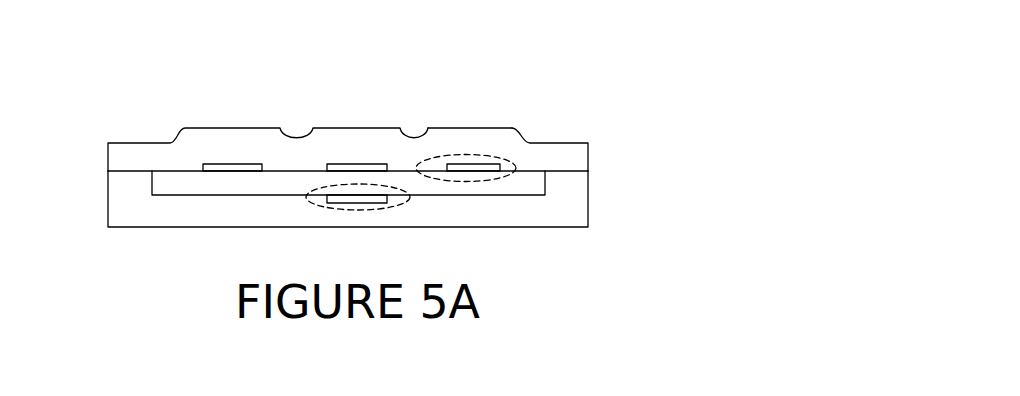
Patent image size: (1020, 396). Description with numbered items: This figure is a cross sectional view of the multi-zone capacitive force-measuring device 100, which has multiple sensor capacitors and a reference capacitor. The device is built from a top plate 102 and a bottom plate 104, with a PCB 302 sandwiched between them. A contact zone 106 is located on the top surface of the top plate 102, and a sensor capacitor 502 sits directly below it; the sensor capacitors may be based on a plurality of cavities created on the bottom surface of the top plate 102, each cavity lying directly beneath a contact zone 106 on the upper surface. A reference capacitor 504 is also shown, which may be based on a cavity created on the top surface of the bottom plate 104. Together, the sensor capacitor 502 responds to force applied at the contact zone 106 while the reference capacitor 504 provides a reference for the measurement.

The multi-zone capacitive force-measuring device 100 is at (140, 267).
The top plate 102 is at (512, 128).
The bottom plate 104 is at (508, 217).
The contact zone 106 is at (490, 137).
The PCB 302 is at (517, 192).
The sensor capacitor 502 is at (508, 164).
The reference capacitor 504 is at (373, 208).